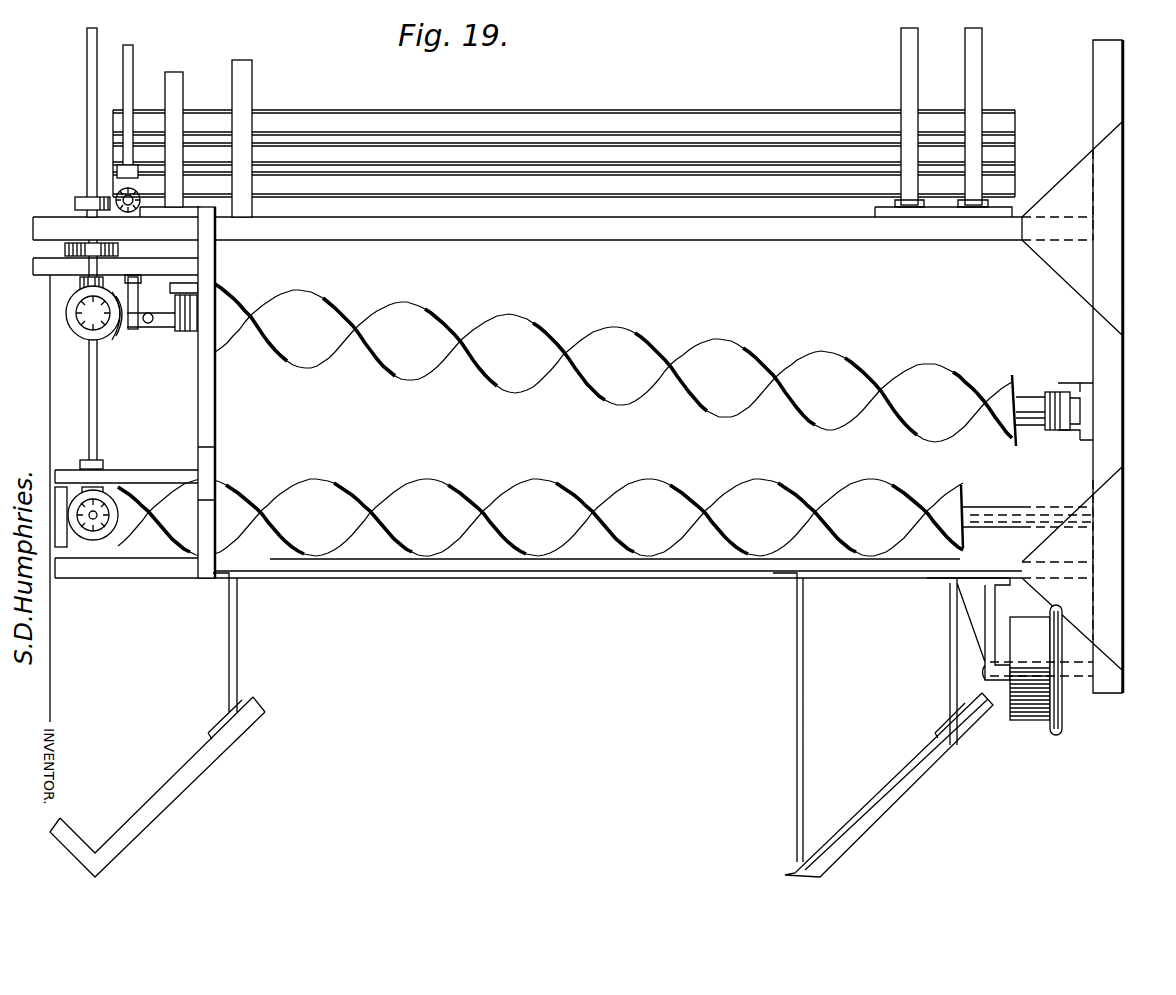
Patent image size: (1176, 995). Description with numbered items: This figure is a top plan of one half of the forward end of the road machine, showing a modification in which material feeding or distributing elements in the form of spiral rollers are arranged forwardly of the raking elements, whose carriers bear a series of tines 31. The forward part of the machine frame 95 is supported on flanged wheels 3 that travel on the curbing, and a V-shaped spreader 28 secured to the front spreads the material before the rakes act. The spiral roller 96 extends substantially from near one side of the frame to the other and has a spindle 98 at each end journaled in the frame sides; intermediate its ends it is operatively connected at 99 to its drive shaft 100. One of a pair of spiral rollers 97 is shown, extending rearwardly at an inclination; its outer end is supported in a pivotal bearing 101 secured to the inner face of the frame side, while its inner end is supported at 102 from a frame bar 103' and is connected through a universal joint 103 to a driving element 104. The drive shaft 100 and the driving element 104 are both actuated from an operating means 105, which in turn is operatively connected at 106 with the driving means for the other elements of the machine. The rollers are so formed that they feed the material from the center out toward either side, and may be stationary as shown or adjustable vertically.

The flanged wheel 3 is at (1030, 722).
The spreader 28 is at (215, 765).
The tines 31 is at (566, 114).
The machine frame 95 is at (1112, 404).
The spiral roller 96 is at (650, 546).
The spiral roller 97 is at (600, 390).
The spindle 98 is at (1016, 512).
The operative connection 99 is at (112, 497).
The drive shaft 100 is at (99, 418).
The pivotal bearing 101 is at (1050, 395).
The support 102 is at (190, 310).
The universal joint 103 is at (238, 392).
The frame bar 103' is at (155, 338).
The driving element 104 is at (125, 342).
The operating means 105 is at (78, 295).
The operative connection 106 is at (120, 187).